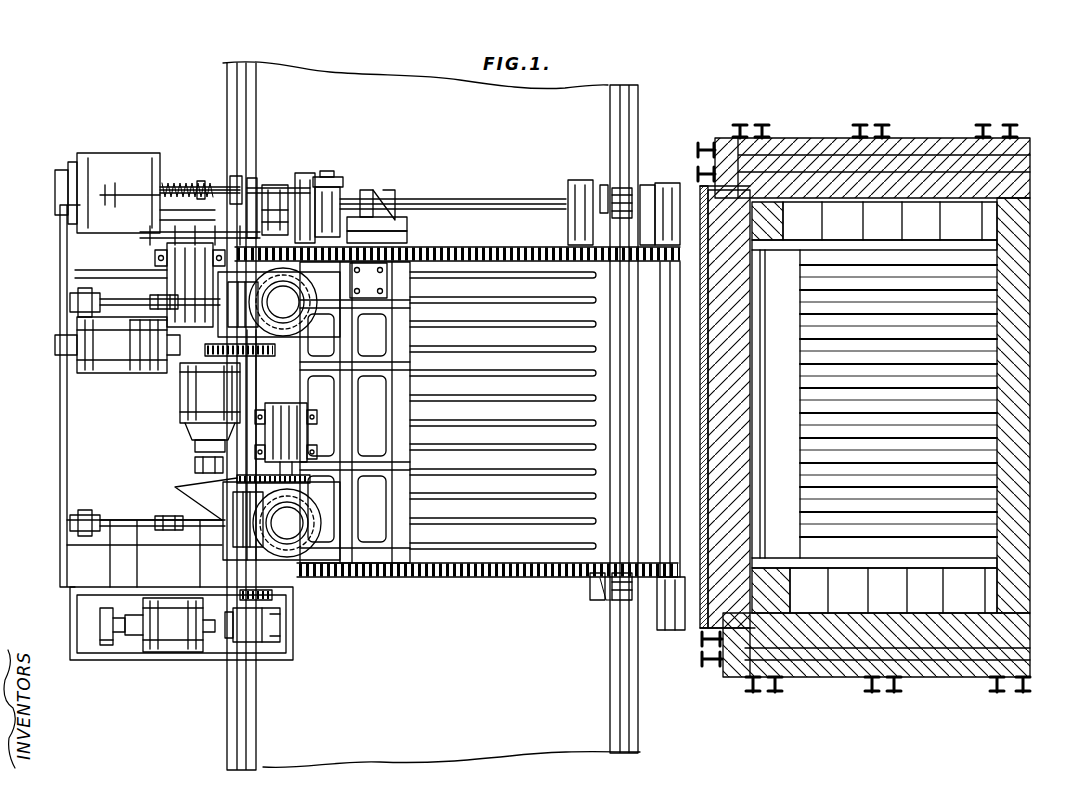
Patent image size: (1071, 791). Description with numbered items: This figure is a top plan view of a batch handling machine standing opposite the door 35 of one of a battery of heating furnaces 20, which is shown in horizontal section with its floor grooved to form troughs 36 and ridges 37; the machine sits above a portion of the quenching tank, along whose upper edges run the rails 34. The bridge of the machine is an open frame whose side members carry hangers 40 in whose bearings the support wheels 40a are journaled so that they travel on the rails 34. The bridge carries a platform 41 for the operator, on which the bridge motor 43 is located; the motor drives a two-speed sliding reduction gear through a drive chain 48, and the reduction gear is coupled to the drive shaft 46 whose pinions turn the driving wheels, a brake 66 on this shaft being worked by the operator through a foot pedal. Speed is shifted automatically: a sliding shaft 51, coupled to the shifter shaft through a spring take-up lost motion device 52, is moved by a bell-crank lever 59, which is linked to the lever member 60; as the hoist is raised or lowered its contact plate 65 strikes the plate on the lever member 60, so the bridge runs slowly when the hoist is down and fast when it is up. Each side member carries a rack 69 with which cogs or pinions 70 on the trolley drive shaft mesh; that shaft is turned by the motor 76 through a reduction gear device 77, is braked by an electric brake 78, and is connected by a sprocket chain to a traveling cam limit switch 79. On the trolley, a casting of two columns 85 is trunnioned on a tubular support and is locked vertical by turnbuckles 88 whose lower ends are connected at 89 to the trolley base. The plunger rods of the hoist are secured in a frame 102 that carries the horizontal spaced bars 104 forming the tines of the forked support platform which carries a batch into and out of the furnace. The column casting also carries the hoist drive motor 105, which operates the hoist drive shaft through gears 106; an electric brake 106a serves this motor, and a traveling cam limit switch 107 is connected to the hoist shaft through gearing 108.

The heating furnaces 20 is at (431, 415).
The rails 34 is at (248, 710).
The door 35 is at (725, 612).
The troughs 36 is at (985, 300).
The ridges 37 is at (958, 478).
The hangers 40 is at (570, 184).
The support wheels 40a is at (240, 205).
The platform 41 is at (60, 477).
The bridge motor 43 is at (133, 365).
The drive shaft 46 is at (490, 200).
The drive chain 48 is at (60, 243).
The sliding shaft 51 is at (262, 187).
The spring take-up lost motion device 52 is at (182, 183).
The bell-crank lever 59 is at (340, 184).
The lever member 60 is at (372, 192).
The contact plate 65 is at (377, 282).
The brake 66 is at (320, 190).
The rack 69 is at (496, 249).
The cogs or pinions 70 is at (253, 252).
The motor 76 is at (172, 654).
The reduction gear device 77 is at (240, 630).
The electric brake 78 is at (108, 647).
The traveling cam limit switch 79 is at (175, 265).
The columns 85 is at (300, 315).
The turnbuckles 88 is at (165, 296).
The lower end connection 89 is at (75, 298).
The frame 102 is at (382, 545).
The horizontal spaced bars 104 is at (540, 527).
The hoist drive motor 105 is at (185, 404).
The gears 106 is at (258, 358).
The electric brake 106a is at (195, 465).
The traveling cam limit switch 107 is at (298, 432).
The gearing 108 is at (237, 478).